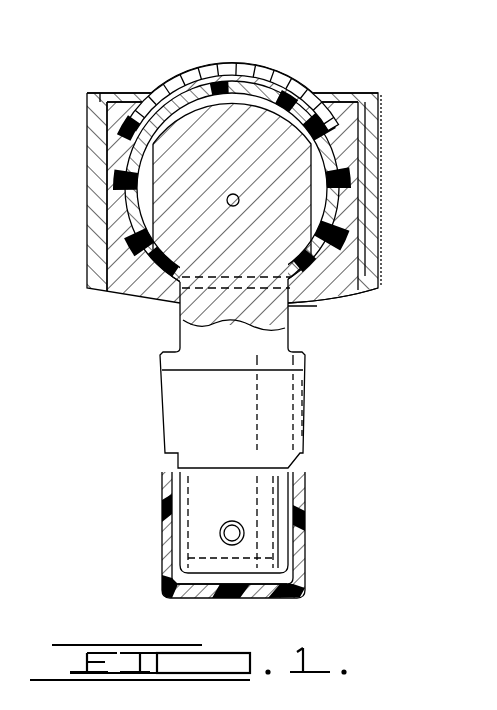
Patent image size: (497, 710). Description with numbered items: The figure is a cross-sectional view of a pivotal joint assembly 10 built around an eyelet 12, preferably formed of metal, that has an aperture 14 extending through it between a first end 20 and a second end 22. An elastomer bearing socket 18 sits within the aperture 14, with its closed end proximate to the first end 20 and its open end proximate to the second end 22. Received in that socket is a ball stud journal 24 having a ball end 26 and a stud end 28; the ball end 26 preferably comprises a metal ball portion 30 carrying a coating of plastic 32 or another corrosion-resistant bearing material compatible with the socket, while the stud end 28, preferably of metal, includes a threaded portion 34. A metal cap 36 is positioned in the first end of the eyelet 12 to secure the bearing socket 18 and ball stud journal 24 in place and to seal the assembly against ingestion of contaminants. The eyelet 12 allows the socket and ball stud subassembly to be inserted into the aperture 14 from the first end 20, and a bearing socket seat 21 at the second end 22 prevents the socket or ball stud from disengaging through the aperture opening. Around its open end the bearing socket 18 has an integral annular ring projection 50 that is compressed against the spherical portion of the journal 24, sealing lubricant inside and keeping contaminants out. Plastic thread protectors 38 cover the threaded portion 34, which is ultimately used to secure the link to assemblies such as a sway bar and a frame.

The joint assembly 10 is at (428, 98).
The eyelet 12 is at (88, 242).
The aperture 14 is at (140, 276).
The elastomer bearing socket 18 is at (114, 148).
The first end 20 is at (143, 95).
The bearing socket seat 21 is at (300, 300).
The second end 22 is at (152, 298).
The ball stud journal 24 is at (304, 296).
The ball end 26 is at (250, 84).
The stud end 28 is at (160, 443).
The metal ball portion 30 is at (262, 112).
The plastic coating 32 is at (318, 112).
The threaded portion 34 is at (300, 503).
The metal cap 36 is at (172, 64).
The plastic thread protectors 38 is at (305, 573).
The annular ring projection 50 is at (318, 244).